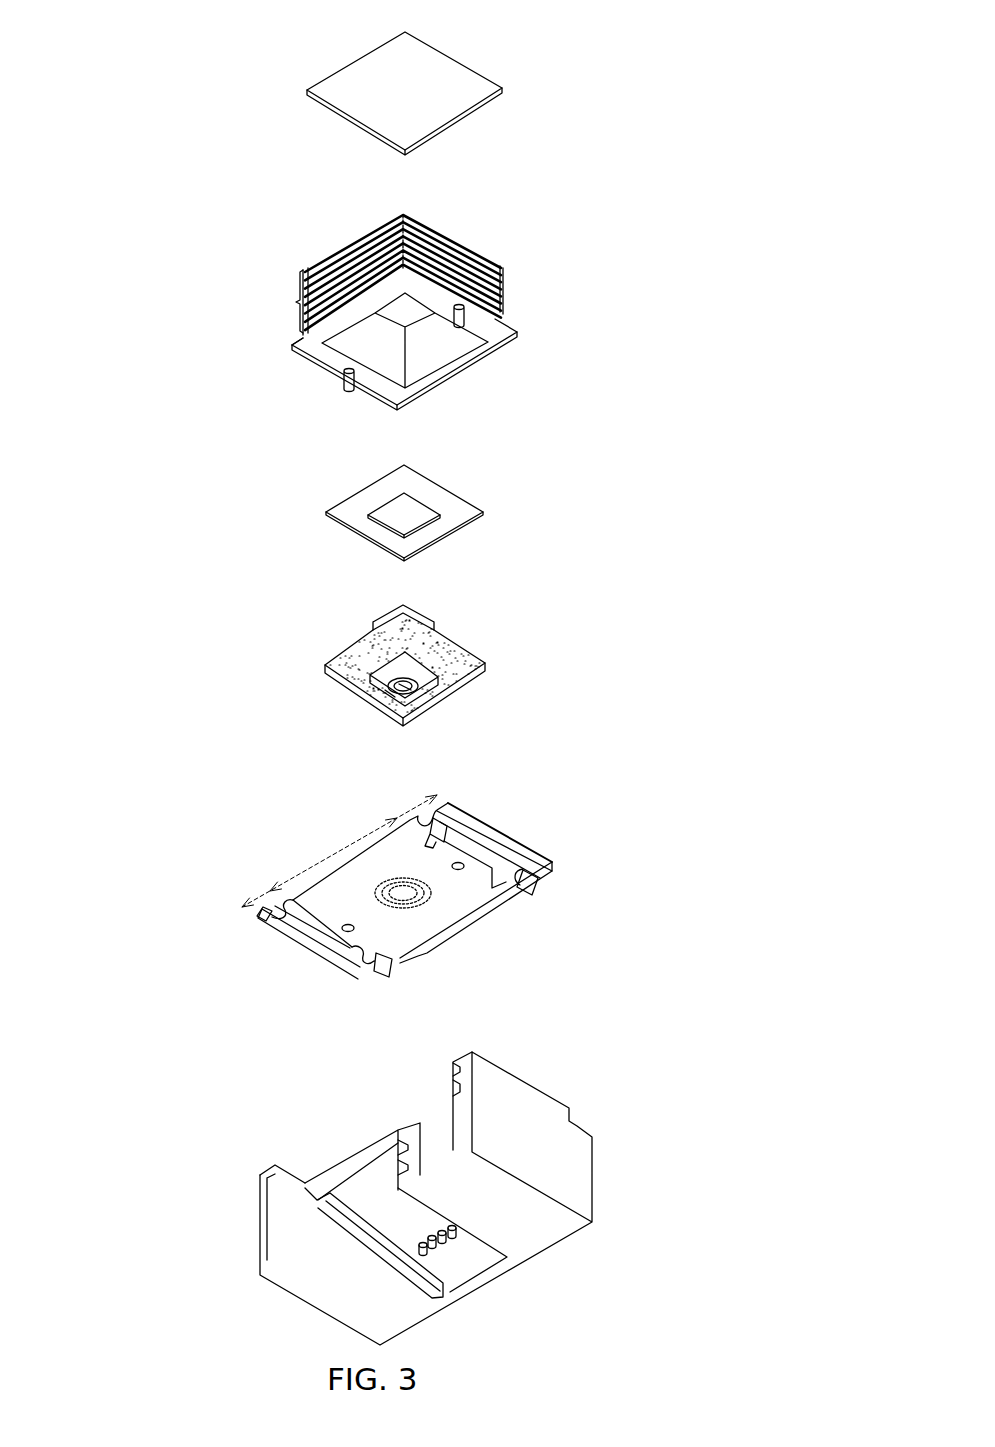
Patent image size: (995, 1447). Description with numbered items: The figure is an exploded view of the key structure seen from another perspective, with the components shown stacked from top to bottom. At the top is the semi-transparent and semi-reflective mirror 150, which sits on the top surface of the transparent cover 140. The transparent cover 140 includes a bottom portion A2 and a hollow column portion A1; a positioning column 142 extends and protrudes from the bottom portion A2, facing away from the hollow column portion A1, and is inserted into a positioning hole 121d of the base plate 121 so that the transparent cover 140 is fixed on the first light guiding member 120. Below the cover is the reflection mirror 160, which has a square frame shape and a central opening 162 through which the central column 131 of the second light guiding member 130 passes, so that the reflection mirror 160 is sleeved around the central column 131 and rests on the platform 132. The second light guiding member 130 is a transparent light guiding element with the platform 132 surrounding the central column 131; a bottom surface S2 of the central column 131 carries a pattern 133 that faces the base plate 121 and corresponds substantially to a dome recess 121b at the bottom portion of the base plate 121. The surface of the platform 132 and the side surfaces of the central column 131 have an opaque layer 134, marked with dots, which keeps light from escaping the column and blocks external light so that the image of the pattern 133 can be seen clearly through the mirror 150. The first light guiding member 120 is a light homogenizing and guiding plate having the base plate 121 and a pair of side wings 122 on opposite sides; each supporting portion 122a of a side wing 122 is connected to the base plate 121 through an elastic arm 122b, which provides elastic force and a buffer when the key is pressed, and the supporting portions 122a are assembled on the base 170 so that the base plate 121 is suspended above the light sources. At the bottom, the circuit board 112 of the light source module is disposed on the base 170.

The semi-transparent and semi-reflective mirror 150 is at (449, 72).
The transparent cover 140 is at (424, 312).
The positioning column 142 is at (452, 327).
The hollow column portion A1 is at (286, 301).
The bottom portion A2 is at (292, 343).
The reflection mirror 160 is at (428, 512).
The central opening 162 is at (397, 512).
The second light guiding member 130 is at (430, 667).
The central column 131 is at (405, 612).
The platform 132 is at (346, 661).
The pattern 133 is at (421, 691).
The opaque layer 134 is at (350, 683).
The bottom surface S2 is at (388, 691).
The first light guiding member 120 is at (254, 797).
The base plate 121 is at (412, 883).
The dome recess 121b is at (403, 892).
The positioning hole 121d is at (348, 932).
The side wings 122 is at (382, 874).
The supporting portion 122a is at (487, 838).
The elastic arm 122b is at (445, 832).
The base 170 is at (463, 1198).
The circuit board 112 is at (352, 1176).